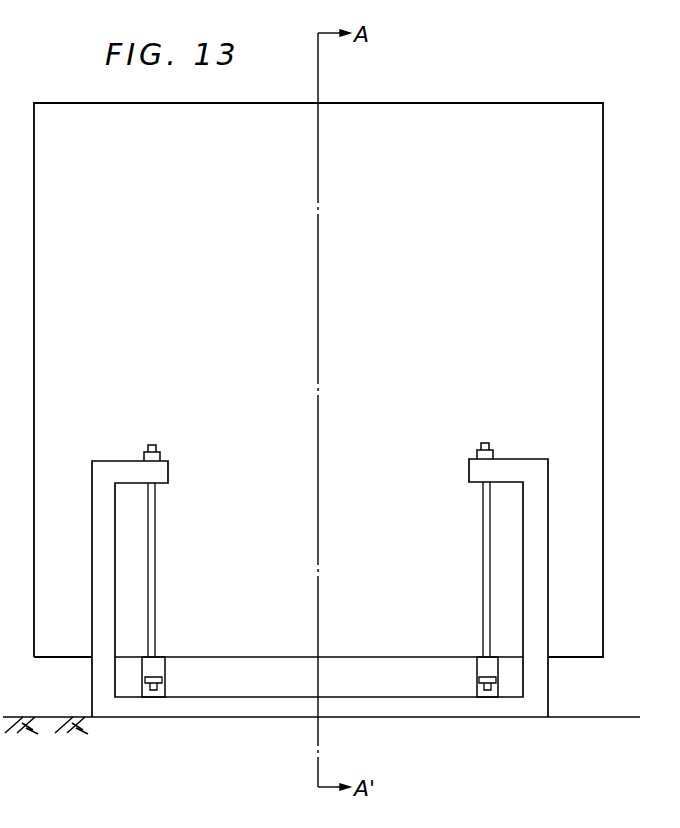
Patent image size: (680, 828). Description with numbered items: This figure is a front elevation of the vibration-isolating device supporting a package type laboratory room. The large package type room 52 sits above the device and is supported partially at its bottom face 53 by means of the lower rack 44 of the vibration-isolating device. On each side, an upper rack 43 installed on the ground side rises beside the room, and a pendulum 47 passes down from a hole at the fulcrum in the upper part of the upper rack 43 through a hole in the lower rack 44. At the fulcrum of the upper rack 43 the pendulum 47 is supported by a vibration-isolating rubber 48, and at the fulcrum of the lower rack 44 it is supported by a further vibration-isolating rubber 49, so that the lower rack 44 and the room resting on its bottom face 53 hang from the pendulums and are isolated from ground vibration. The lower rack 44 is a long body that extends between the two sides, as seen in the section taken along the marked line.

The package type room 52 is at (603, 302).
The bottom face 53 is at (409, 657).
The upper rack 43 is at (535, 503).
The pendulum 47 is at (487, 577).
The vibration-isolating rubber 48 is at (493, 452).
The lower rack 44 is at (497, 658).
The vibration-isolating rubber 49 is at (497, 682).